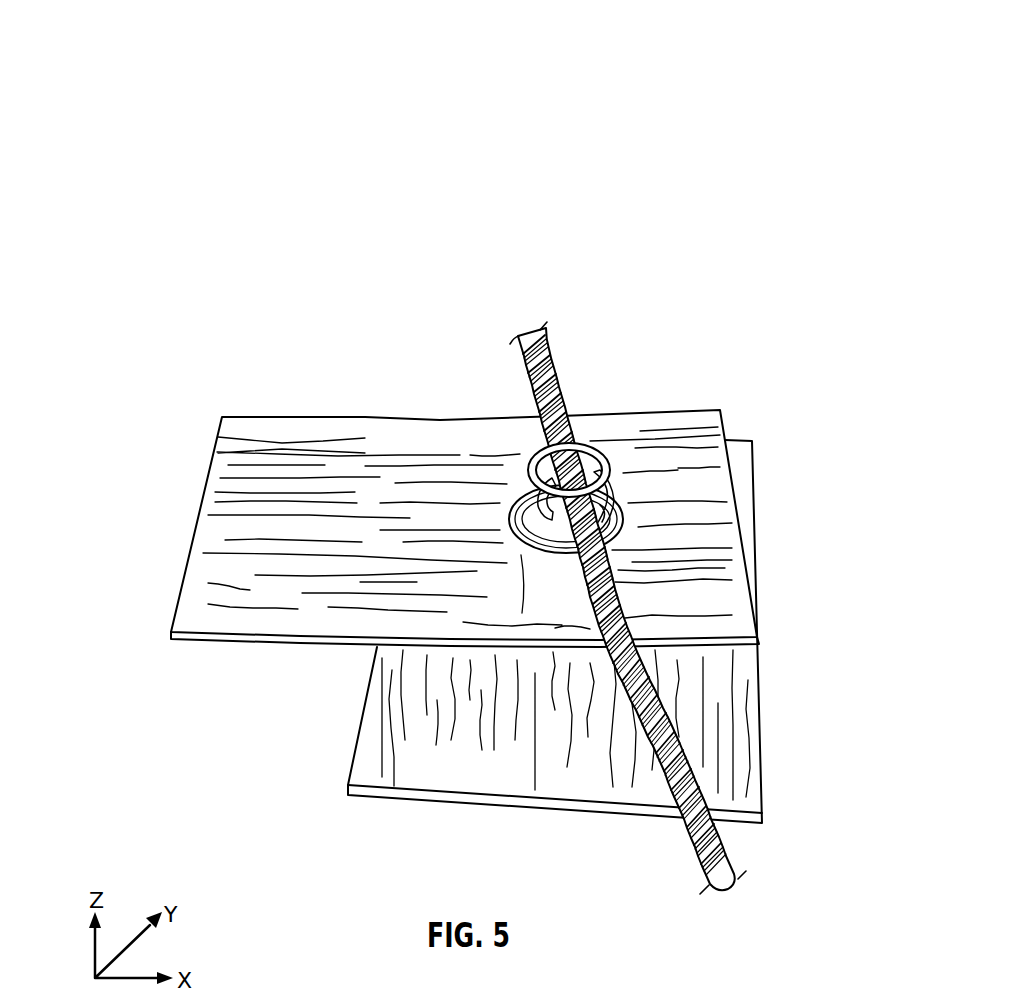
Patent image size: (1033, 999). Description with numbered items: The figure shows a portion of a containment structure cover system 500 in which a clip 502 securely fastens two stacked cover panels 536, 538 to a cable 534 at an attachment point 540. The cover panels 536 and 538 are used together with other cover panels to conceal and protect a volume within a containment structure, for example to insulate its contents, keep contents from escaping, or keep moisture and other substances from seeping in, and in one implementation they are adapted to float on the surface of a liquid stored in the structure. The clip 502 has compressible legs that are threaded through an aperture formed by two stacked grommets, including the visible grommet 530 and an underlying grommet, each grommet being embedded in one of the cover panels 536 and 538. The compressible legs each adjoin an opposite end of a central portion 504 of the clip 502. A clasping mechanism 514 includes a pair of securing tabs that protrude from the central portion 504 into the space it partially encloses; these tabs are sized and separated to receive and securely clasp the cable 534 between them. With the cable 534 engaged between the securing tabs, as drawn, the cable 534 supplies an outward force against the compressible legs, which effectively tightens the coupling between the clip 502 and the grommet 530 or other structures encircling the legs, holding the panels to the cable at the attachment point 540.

The containment structure cover system 500 is at (128, 64).
The clip 502 is at (509, 437).
The central portion 504 is at (566, 447).
The clasping mechanism 514 is at (531, 488).
The grommet 530 is at (616, 515).
The cable 534 is at (550, 368).
The cover panel 536 is at (302, 591).
The cover panel 538 is at (392, 722).
The attachment point 540 is at (634, 453).